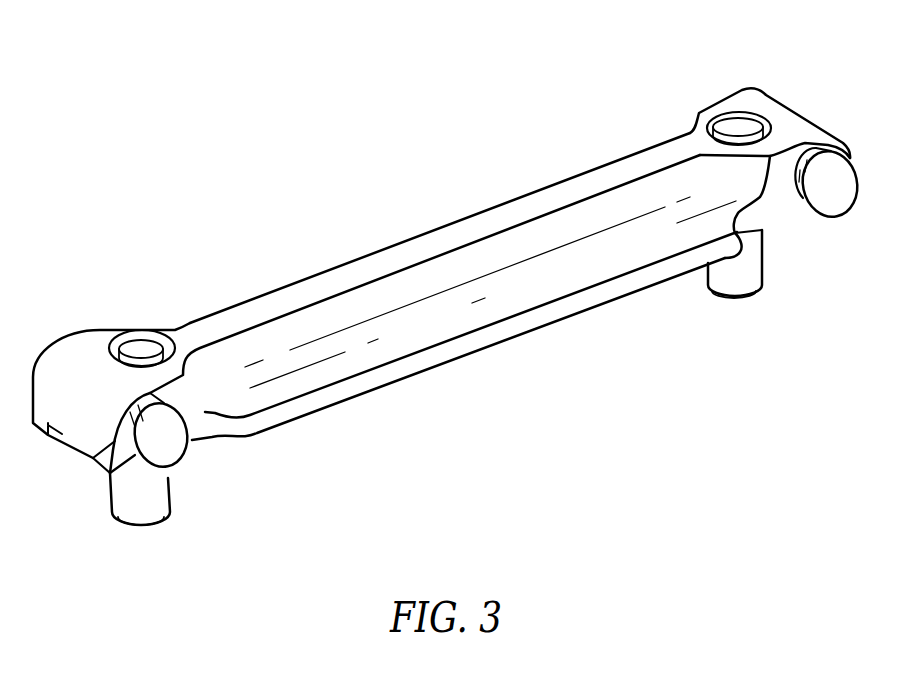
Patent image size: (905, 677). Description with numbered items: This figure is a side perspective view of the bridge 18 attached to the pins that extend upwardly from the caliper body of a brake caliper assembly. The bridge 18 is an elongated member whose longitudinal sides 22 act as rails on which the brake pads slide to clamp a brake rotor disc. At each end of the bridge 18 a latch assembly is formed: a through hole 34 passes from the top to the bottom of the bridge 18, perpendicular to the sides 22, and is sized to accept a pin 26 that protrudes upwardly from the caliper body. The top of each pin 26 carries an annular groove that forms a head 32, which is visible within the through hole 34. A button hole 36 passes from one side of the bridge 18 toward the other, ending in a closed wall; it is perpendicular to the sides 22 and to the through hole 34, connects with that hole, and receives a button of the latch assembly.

The bridge 18 is at (565, 117).
The longitudinal sides 22 is at (560, 282).
The pin 26 is at (128, 498).
The head 32 is at (142, 347).
The through hole 34 is at (118, 345).
The button hole 36 is at (93, 458).